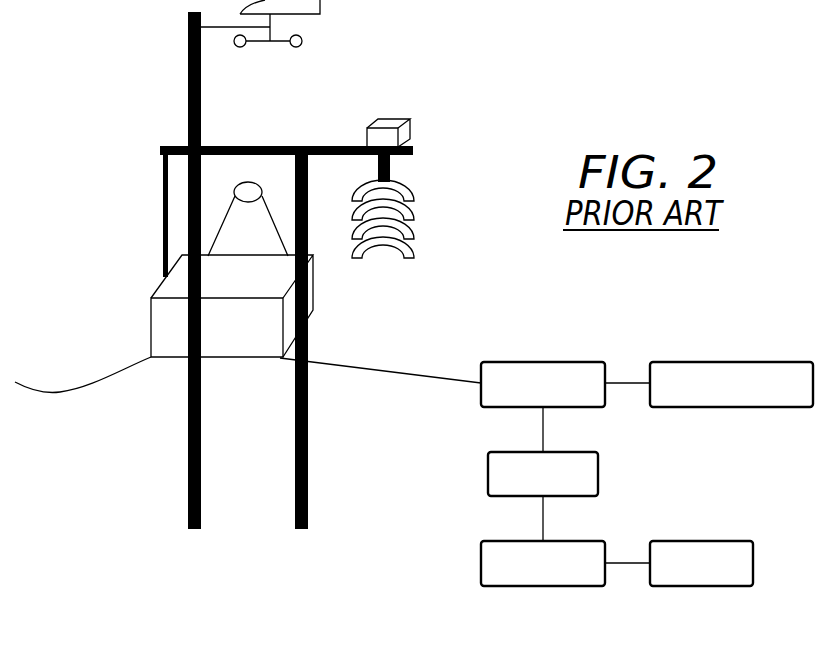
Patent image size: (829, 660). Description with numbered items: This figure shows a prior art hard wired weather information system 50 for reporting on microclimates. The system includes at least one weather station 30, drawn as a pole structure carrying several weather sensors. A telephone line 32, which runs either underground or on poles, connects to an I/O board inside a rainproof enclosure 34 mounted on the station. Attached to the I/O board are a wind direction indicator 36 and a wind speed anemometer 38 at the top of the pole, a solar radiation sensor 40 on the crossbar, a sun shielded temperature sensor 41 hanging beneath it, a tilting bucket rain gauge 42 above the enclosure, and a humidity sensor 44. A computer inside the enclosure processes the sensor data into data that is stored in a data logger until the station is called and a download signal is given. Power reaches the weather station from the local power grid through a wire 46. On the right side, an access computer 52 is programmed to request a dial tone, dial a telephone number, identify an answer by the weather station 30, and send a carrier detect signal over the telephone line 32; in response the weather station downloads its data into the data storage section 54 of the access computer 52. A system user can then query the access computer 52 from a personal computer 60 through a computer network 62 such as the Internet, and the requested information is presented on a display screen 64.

The weather station 30 is at (308, 212).
The telephone line 32 is at (397, 370).
The rainproof enclosure 34 is at (303, 300).
The wind direction indicator 36 is at (326, 0).
The wind speed anemometer 38 is at (302, 43).
The solar radiation sensor 40 is at (393, 127).
The sun shielded temperature sensor 41 is at (413, 251).
The tilting bucket rain gauge 42 is at (248, 182).
The humidity sensor 44 is at (222, 358).
The wire 46 is at (94, 385).
The hard wired weather information system 50 is at (140, 506).
The access computer 52 is at (558, 360).
The data storage section 54 is at (732, 360).
The personal computer 60 is at (543, 588).
The computer network 62 is at (599, 478).
The display screen 64 is at (707, 588).